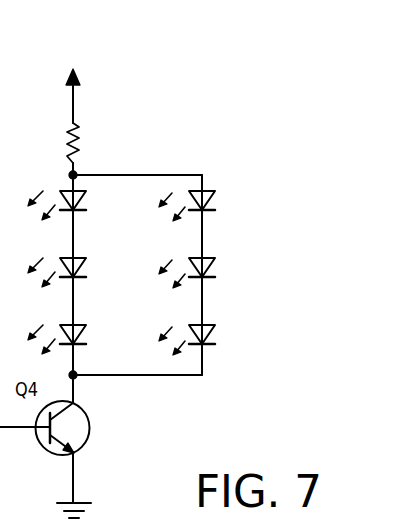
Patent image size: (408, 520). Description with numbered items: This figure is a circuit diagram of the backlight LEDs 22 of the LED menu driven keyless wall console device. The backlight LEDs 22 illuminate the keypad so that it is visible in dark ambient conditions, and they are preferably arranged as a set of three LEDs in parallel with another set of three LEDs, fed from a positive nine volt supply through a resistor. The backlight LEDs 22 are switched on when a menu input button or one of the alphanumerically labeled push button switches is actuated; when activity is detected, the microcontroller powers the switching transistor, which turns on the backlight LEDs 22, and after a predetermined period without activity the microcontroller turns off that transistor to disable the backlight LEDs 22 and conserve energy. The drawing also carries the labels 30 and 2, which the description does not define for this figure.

The power supply circuit 30 is at (0, 97).
The backlight LEDs 22 is at (152, 122).
The light emitting diode emission 2 is at (32, 203).